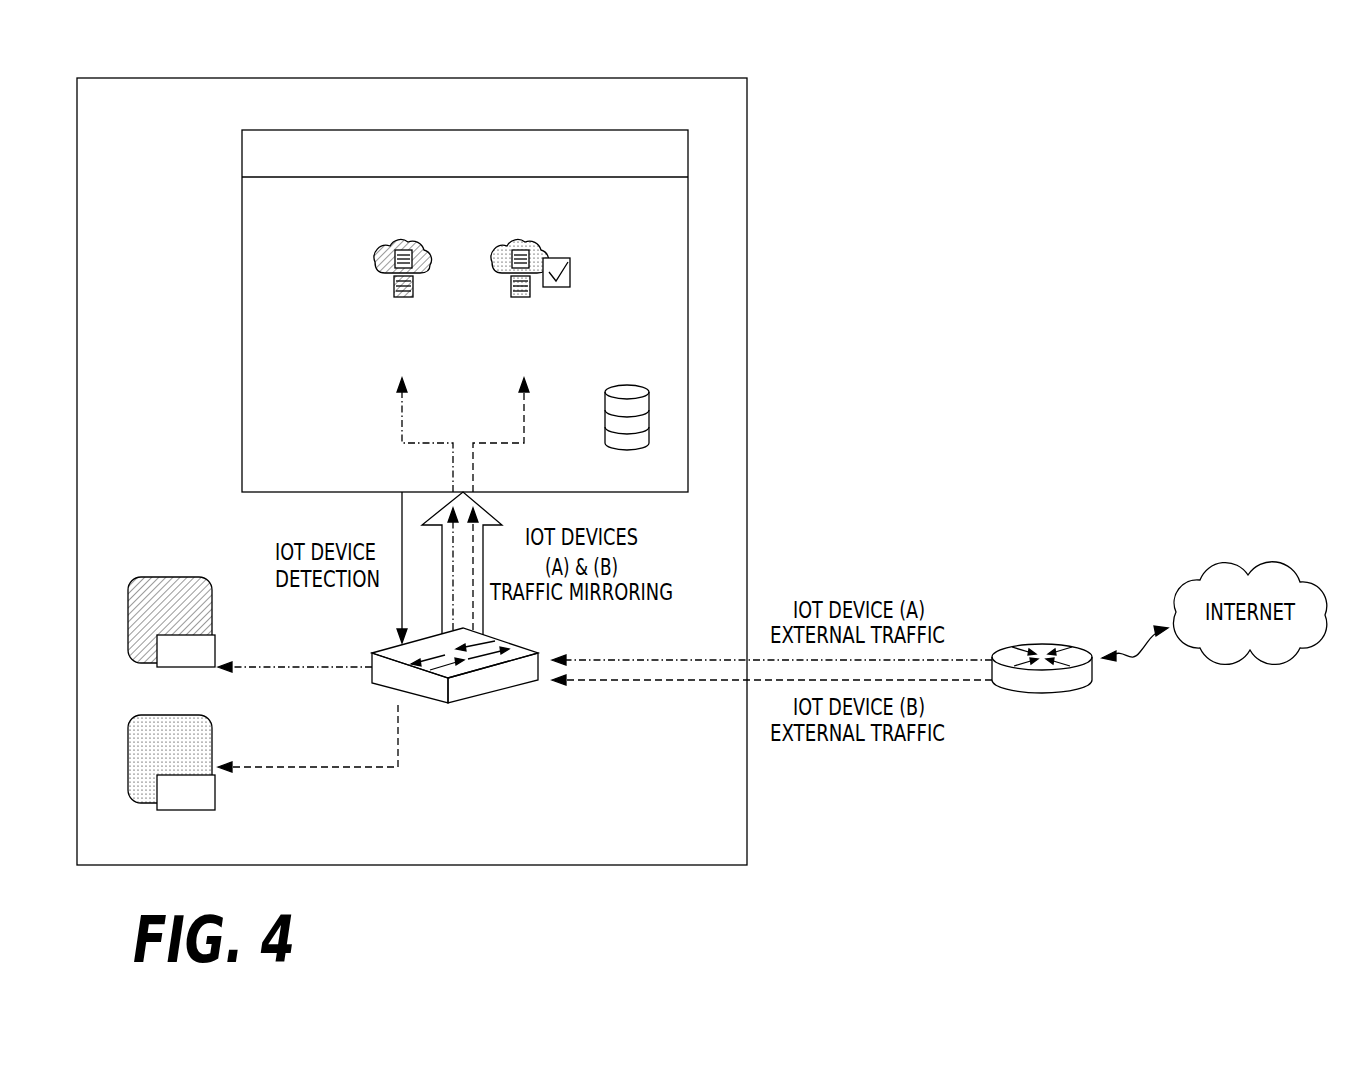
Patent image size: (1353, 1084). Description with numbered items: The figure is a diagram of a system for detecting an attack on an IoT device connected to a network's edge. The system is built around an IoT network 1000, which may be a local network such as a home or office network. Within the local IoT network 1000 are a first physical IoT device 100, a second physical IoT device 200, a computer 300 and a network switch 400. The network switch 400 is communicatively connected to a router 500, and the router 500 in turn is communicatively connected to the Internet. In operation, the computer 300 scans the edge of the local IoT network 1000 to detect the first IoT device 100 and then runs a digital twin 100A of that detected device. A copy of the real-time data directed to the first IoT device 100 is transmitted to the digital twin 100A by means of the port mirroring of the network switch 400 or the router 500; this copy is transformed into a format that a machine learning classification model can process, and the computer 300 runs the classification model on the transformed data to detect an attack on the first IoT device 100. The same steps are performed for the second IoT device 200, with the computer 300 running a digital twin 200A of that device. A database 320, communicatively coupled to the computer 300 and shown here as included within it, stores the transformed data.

The IoT network 1000 is at (747, 106).
The computer 300 is at (242, 160).
The digital twin 100A is at (382, 248).
The digital twin 200A is at (496, 248).
The database 320 is at (622, 378).
The first IoT device 100 is at (172, 577).
The second IoT device 200 is at (212, 750).
The network switch 400 is at (483, 697).
The router 500 is at (1047, 697).